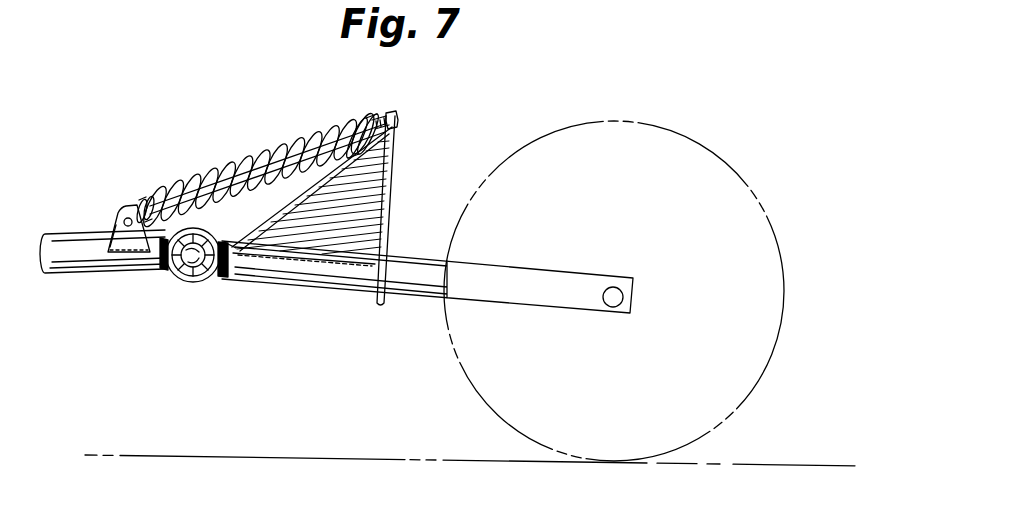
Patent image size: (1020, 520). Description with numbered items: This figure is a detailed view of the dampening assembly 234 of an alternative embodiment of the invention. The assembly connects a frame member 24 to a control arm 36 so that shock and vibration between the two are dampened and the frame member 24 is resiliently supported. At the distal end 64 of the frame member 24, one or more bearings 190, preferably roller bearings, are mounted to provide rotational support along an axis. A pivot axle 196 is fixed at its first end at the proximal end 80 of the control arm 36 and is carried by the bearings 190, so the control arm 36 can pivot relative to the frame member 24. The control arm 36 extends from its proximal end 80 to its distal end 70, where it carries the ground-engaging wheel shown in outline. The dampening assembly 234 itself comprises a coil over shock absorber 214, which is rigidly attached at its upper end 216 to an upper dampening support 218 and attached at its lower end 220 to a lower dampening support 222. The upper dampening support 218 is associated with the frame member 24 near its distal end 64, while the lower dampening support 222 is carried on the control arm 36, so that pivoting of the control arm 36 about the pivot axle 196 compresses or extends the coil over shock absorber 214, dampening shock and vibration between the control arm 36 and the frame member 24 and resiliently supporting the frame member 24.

The frame member 24 is at (67, 283).
The control arm 36 is at (412, 304).
The distal end 64 is at (163, 264).
The distal end 70 is at (626, 300).
The proximal end 80 is at (234, 262).
The bearings 190 is at (204, 274).
The pivot axle 196 is at (188, 268).
The coil over shock absorber 214 is at (240, 164).
The upper end 216 is at (398, 127).
The upper dampening support 218 is at (384, 242).
The lower end 220 is at (123, 211).
The lower dampening support 222 is at (118, 229).
The dampening assembly 234 is at (400, 183).